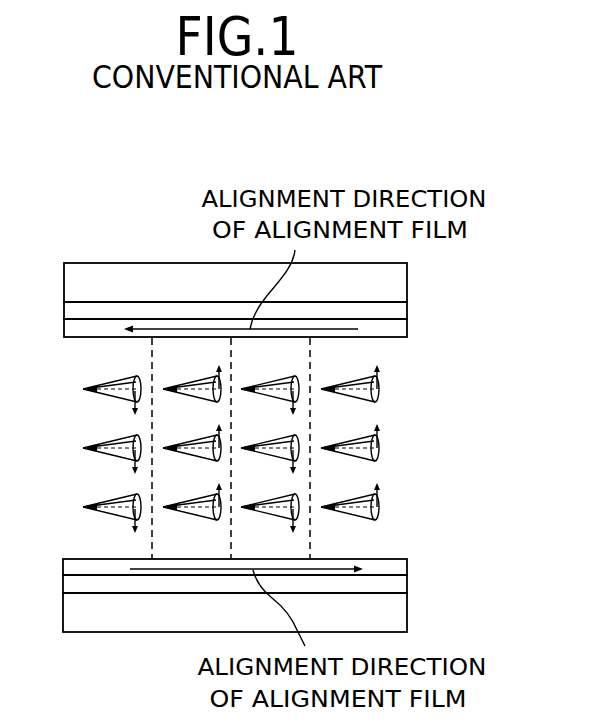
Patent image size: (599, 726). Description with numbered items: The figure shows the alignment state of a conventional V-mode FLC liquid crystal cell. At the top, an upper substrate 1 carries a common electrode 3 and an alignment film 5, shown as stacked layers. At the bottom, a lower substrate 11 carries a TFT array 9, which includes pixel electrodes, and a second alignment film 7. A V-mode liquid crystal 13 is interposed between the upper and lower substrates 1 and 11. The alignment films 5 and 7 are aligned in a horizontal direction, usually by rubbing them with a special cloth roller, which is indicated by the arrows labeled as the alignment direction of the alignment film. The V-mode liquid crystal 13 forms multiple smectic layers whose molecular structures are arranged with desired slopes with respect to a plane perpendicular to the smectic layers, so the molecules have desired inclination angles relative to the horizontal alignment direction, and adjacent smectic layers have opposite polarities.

The upper substrate 1 is at (407, 279).
The common electrode 3 is at (407, 315).
The alignment film 5 is at (407, 336).
The alignment film 7 is at (407, 566).
The TFT array 9 is at (407, 590).
The lower substrate 11 is at (407, 618).
The V-mode liquid crystal 13 is at (102, 507).